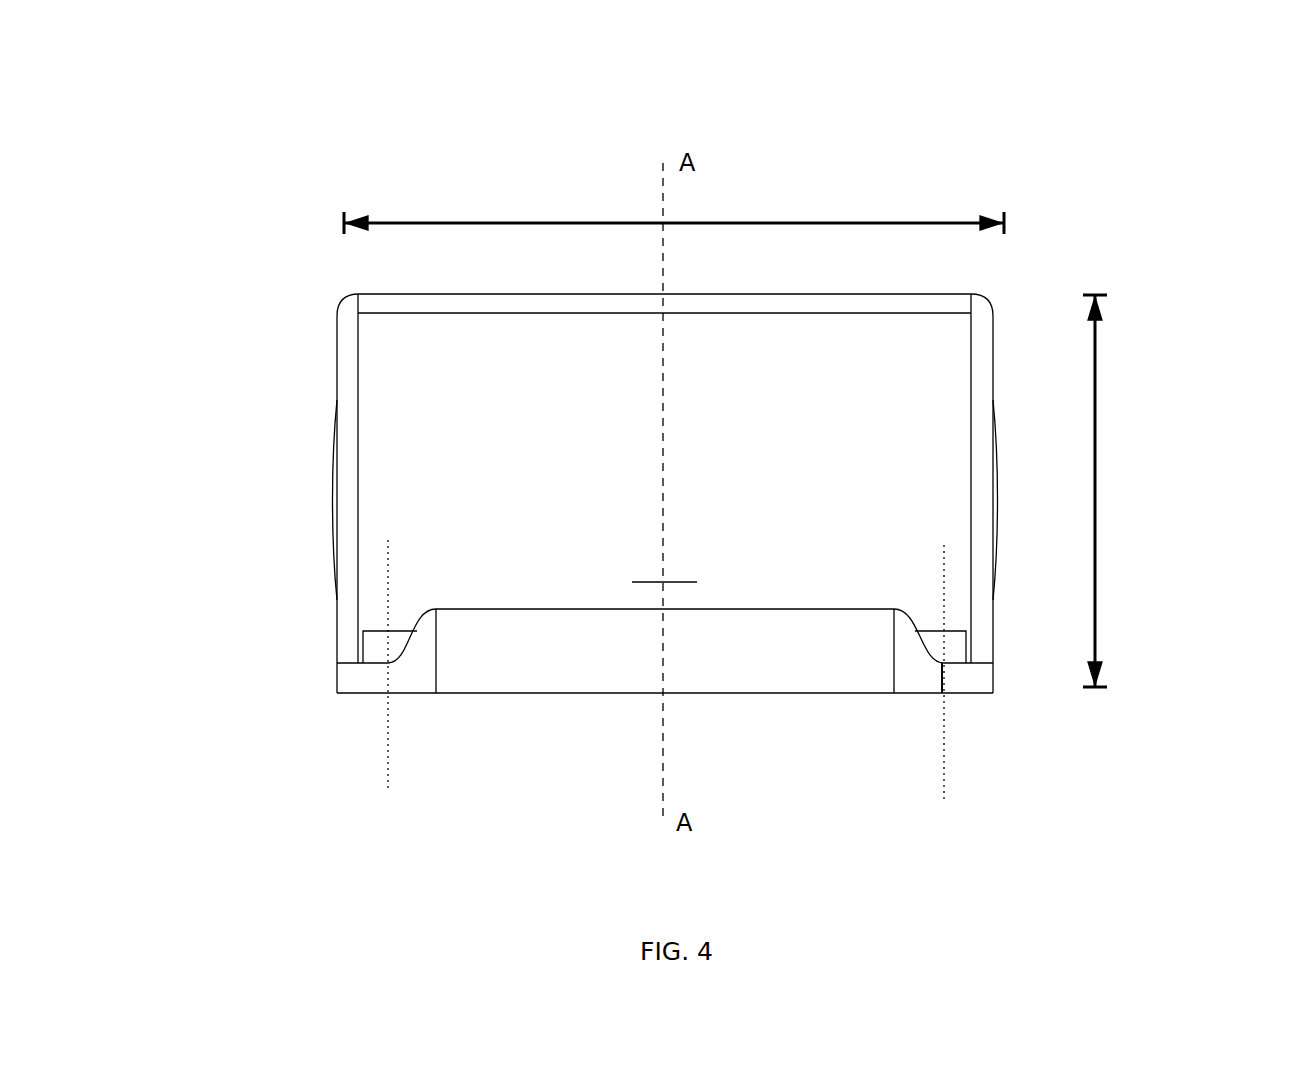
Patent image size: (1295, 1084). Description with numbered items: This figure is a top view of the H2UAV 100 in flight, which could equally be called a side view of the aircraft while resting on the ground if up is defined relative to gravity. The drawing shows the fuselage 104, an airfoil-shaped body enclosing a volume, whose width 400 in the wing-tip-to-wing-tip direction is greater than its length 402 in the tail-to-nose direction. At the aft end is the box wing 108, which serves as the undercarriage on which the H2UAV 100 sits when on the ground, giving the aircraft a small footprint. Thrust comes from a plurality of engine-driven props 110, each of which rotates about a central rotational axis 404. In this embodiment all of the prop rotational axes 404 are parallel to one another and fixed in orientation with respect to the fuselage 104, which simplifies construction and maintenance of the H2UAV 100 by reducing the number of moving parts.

The H2UAV 100 is at (1183, 158).
The fuselage 104 is at (440, 394).
The box wing 108 is at (502, 653).
The prop 110 is at (975, 663).
The width 400 is at (477, 222).
The length 402 is at (1095, 360).
The central rotational axis 404 is at (944, 772).